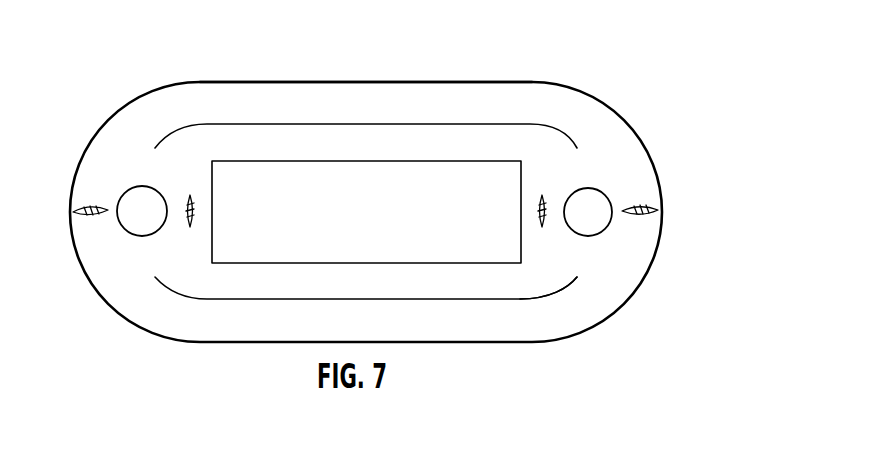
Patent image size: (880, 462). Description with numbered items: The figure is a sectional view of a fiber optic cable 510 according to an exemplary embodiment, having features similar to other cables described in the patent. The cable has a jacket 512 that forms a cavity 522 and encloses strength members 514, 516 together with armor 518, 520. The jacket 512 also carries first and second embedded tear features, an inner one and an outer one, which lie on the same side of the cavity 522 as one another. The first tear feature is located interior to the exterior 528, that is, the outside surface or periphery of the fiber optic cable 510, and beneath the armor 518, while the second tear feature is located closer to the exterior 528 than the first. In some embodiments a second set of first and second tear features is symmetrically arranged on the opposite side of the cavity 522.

The fiber optic cable 510 is at (690, 93).
The jacket 512 is at (512, 283).
The strength member 514 is at (595, 208).
The strength member 516 is at (140, 208).
The armor 518 is at (518, 123).
The armor 520 is at (490, 300).
The cavity 522 is at (240, 243).
The exterior 528 is at (330, 73).